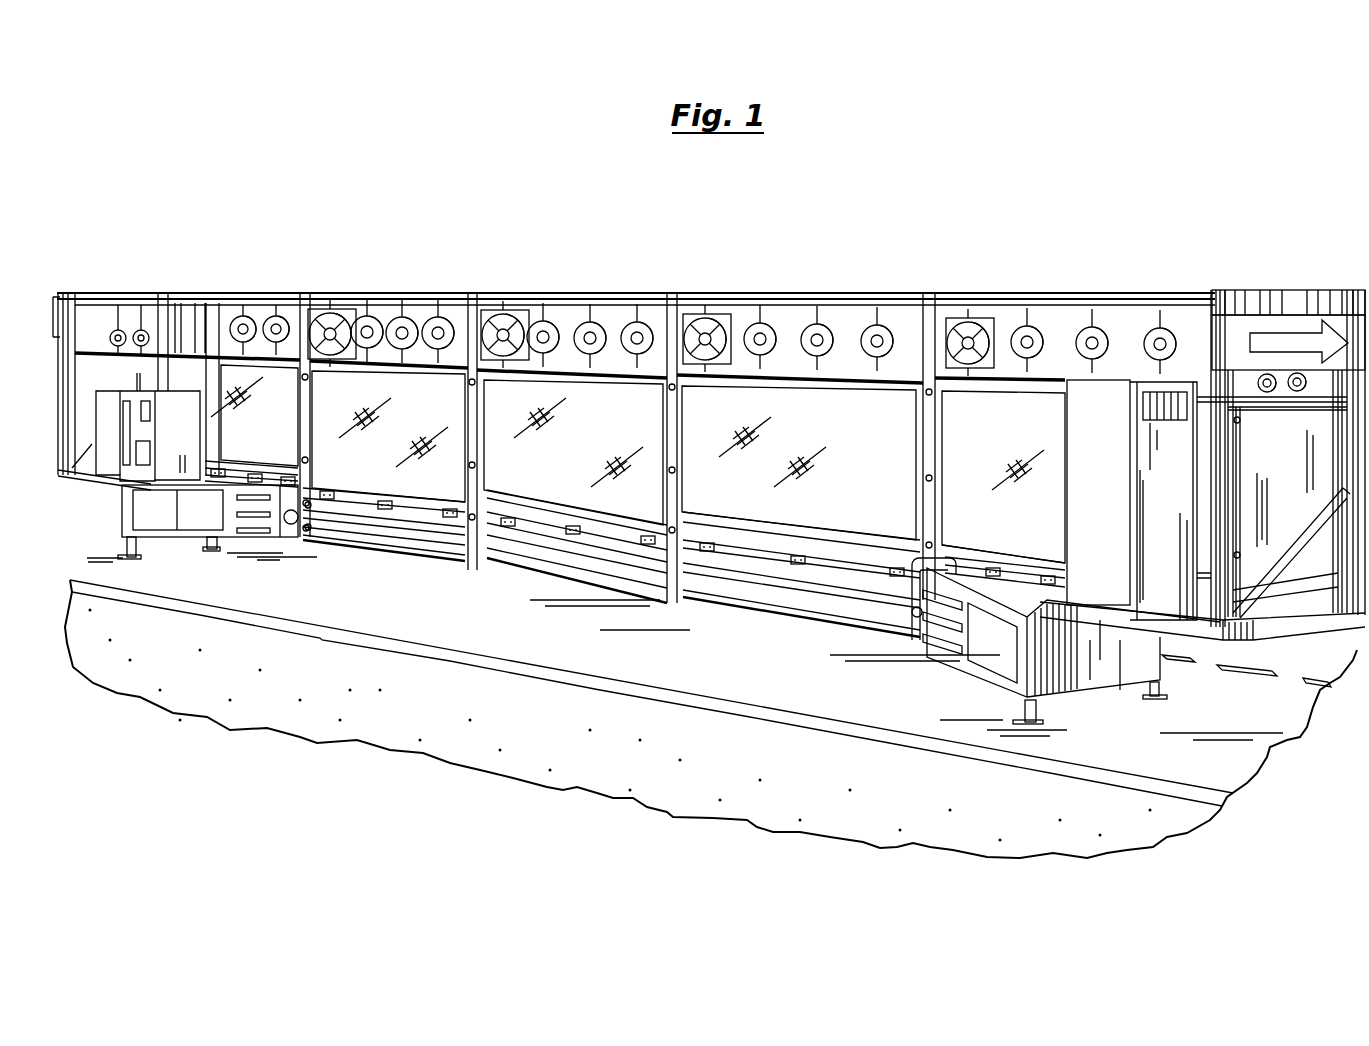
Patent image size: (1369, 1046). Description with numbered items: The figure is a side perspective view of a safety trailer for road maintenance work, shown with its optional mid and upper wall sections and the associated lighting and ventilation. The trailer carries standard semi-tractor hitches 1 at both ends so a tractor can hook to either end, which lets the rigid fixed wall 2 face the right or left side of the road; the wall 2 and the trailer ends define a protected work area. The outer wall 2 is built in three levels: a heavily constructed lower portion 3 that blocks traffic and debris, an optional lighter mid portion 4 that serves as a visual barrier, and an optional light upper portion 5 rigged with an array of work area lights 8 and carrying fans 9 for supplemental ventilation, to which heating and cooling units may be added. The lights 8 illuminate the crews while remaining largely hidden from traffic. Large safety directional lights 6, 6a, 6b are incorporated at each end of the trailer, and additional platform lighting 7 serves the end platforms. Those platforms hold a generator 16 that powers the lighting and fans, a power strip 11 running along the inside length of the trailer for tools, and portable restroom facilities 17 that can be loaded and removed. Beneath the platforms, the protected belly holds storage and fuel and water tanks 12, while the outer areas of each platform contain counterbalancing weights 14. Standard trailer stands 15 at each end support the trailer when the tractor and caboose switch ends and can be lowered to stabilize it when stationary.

The hitch 1 is at (1158, 205).
The fixed wall 2 is at (580, 596).
The lower portion 3 is at (390, 533).
The mid portion 4 is at (638, 464).
The upper portion 5 is at (232, 300).
The safety directional light 6 is at (710, 394).
The safety directional light 6a is at (1258, 300).
The safety directional light 6b is at (1290, 340).
The platform lighting 7 is at (125, 330).
The work area light 8 is at (276, 316).
The fan 9 is at (332, 313).
The power strip 11 is at (233, 473).
The fuel and water tank 12 is at (193, 513).
The counterbalancing weight 14 is at (997, 701).
The trailer stand 15 is at (207, 553).
The generator 16 is at (148, 436).
The restroom facility 17 is at (1132, 500).